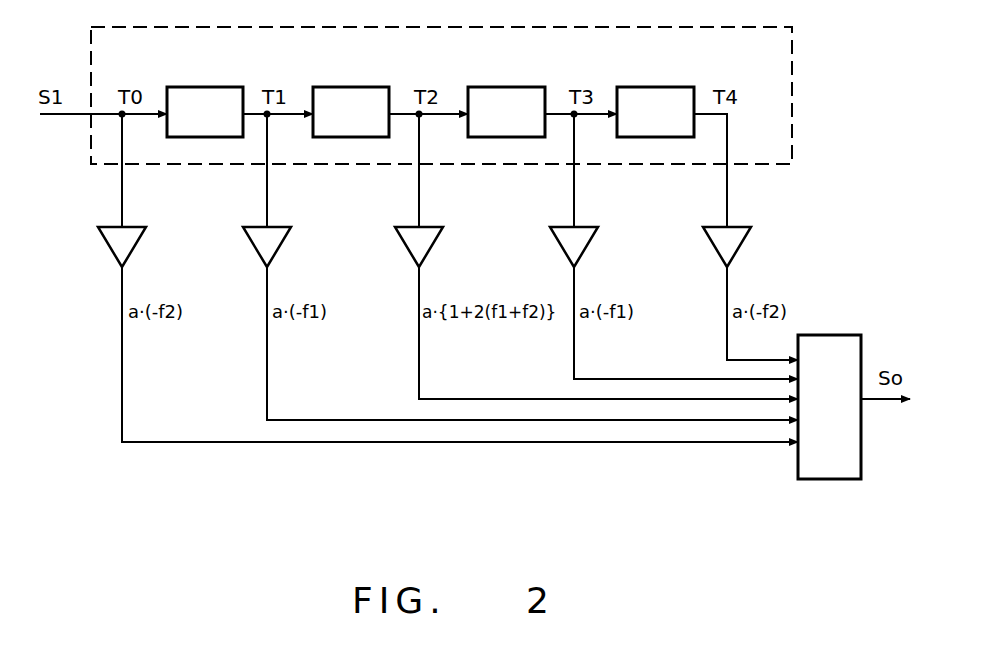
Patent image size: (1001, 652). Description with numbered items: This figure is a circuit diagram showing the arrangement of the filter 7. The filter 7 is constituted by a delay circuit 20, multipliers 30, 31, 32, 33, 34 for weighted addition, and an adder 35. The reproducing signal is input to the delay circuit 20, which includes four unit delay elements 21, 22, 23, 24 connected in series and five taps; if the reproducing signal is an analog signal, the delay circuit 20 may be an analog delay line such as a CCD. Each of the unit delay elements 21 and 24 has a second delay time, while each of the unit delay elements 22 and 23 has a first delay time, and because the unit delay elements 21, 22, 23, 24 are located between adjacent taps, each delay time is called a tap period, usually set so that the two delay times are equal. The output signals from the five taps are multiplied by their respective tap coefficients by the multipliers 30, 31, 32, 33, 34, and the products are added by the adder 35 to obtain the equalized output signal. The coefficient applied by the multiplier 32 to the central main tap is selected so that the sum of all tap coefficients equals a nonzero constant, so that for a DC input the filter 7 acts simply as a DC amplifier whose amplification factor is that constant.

The filter 7 is at (820, 233).
The delay circuit 20 is at (792, 97).
The unit delay element 21 is at (207, 87).
The unit delay element 22 is at (349, 87).
The unit delay element 23 is at (506, 87).
The unit delay element 24 is at (654, 87).
The multiplier 30 is at (146, 230).
The multiplier 31 is at (291, 230).
The multiplier 32 is at (443, 230).
The multiplier 33 is at (598, 230).
The multiplier 34 is at (751, 230).
The adder 35 is at (826, 335).